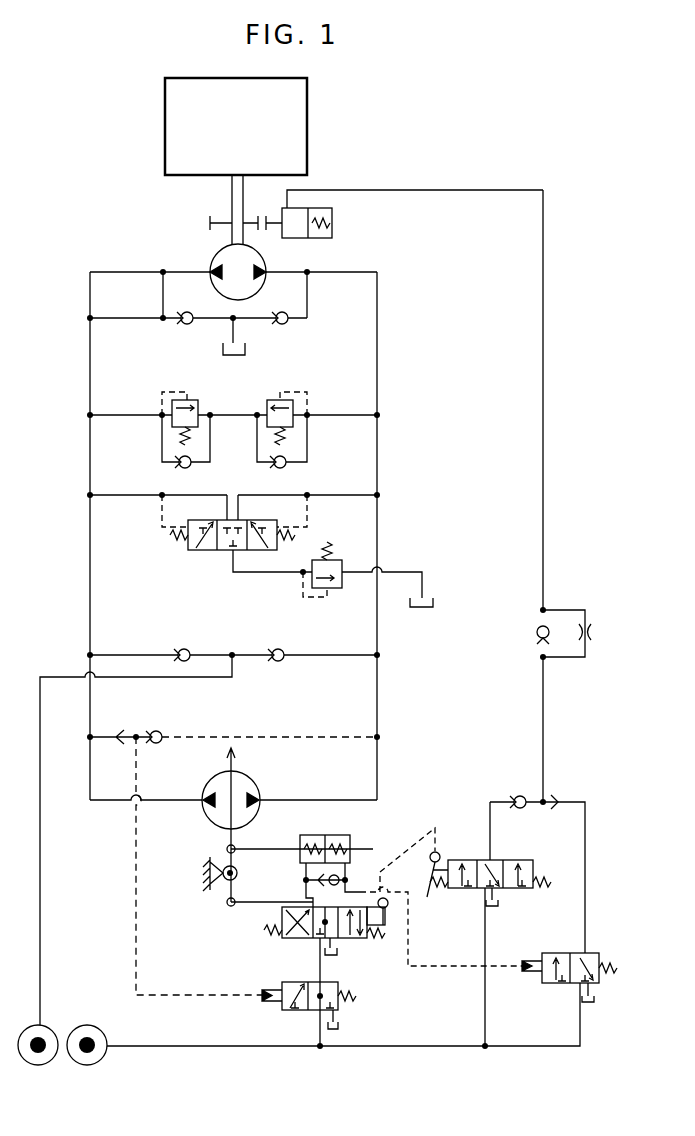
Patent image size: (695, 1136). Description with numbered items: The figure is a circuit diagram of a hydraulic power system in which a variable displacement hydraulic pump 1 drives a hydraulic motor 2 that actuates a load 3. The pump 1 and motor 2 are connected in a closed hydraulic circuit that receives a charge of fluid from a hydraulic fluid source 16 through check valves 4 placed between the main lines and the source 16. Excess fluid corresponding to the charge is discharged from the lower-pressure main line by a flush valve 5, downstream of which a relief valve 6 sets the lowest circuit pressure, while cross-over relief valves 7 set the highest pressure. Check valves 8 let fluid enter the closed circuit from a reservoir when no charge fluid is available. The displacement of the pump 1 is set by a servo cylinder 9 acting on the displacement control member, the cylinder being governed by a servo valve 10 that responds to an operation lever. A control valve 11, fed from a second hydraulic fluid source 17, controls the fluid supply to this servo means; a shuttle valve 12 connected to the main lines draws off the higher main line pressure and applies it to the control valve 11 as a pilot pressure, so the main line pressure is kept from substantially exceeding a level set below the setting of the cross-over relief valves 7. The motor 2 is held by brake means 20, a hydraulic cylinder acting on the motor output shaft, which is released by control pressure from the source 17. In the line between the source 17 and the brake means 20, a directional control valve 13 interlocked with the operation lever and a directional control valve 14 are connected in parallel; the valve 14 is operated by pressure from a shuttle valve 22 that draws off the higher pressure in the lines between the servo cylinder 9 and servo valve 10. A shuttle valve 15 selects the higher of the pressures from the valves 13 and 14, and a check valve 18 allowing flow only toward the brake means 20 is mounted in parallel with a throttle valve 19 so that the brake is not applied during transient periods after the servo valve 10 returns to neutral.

The variable displacement hydraulic pump 1 is at (255, 786).
The hydraulic motor 2 is at (212, 258).
The load 3 is at (165, 116).
The check valves 4 is at (182, 654).
The flush valve 5 is at (195, 551).
The relief valve 6 is at (326, 590).
The cross-over relief valves 7 is at (162, 429).
The check valves 8 is at (187, 325).
The servo cylinder 9 is at (350, 841).
The servo valve 10 is at (290, 940).
The control valve 11 is at (284, 1011).
The shuttle valve 12 is at (155, 732).
The directional control valve 13 is at (482, 860).
The directional control valve 14 is at (600, 954).
The shuttle valve 15 is at (552, 800).
The hydraulic fluid source 16 is at (38, 1065).
The hydraulic fluid source 17 is at (87, 1065).
The check valve 18 is at (536, 630).
The throttle valve 19 is at (602, 636).
The brake means 20 is at (335, 225).
The shuttle valve 22 is at (306, 870).